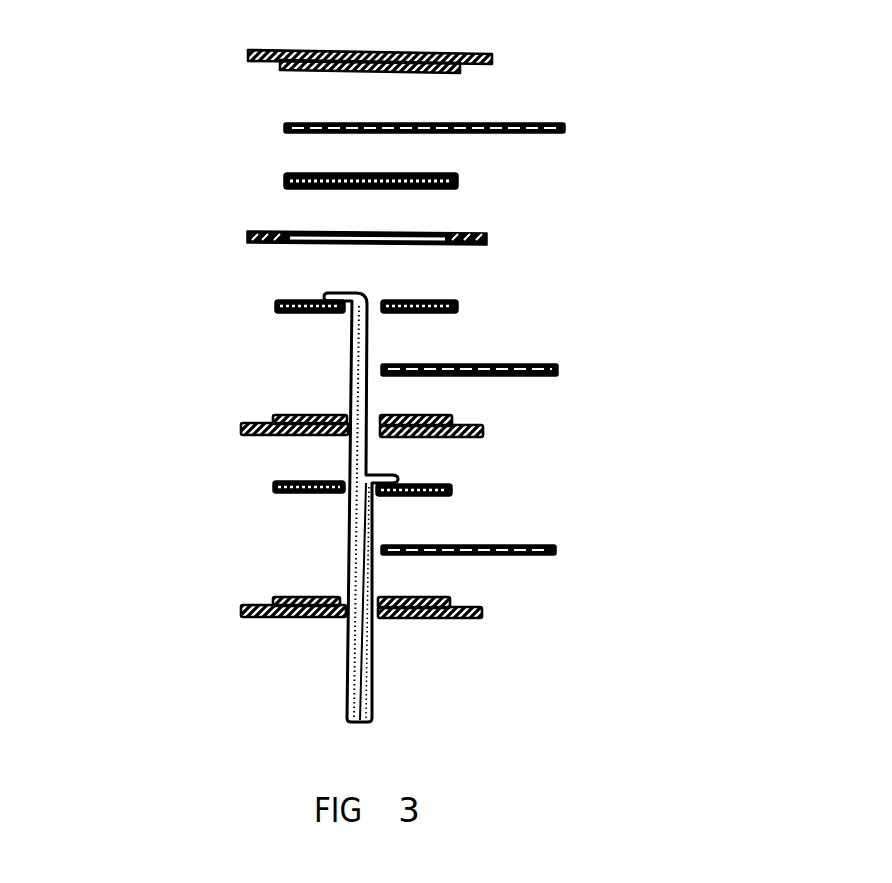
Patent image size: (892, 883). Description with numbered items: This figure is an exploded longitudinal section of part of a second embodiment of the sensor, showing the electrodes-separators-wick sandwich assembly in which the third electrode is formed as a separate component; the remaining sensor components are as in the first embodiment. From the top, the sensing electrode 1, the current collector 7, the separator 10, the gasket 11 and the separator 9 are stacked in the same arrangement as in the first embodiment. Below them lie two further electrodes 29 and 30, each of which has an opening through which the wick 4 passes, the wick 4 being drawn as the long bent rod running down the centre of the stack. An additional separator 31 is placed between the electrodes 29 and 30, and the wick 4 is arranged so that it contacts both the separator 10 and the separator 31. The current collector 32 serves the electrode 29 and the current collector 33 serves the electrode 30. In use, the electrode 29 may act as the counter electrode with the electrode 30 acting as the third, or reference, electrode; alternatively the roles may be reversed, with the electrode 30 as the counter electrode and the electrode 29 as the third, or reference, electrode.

The sensing electrode 1 is at (492, 58).
The wick 4 is at (347, 645).
The current collector 7 is at (284, 130).
The separator 9 is at (456, 307).
The separator 10 is at (458, 182).
The gasket 11 is at (247, 236).
The electrode 29 is at (241, 429).
The electrode 30 is at (483, 614).
The additional separator 31 is at (273, 486).
The current collector 32 is at (548, 375).
The current collector 33 is at (556, 545).